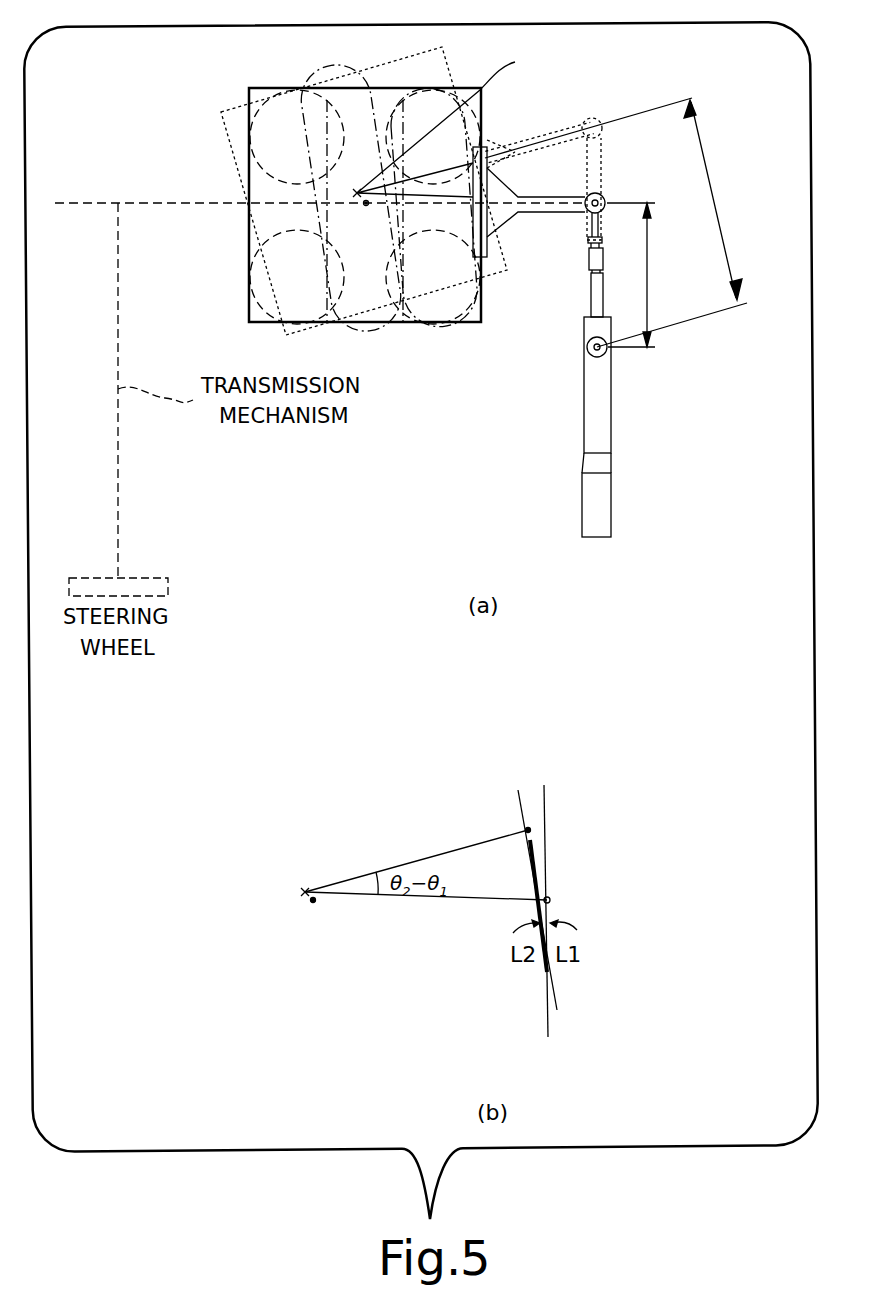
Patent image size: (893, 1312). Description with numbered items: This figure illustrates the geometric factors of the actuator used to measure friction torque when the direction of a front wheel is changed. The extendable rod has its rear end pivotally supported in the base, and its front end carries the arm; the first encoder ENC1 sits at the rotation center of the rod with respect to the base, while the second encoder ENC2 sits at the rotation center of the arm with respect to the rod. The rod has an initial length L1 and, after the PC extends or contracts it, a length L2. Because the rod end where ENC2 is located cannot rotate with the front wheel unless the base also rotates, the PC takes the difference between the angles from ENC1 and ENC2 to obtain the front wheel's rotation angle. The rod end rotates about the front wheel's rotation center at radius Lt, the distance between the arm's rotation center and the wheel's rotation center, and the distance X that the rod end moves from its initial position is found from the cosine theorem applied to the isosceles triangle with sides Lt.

The first encoder ENC1 is at (592, 350).
The second encoder ENC2 is at (640, 170).
The length of the extendable rod in the initial state L1 is at (642, 275).
The length of the extendable rod after extension or contraction L2 is at (672, 223).
The distance between the rotation center of the arm and the rotation center of the f Lt is at (427, 877).
The distance of movement of the extendable rod end X is at (533, 850).